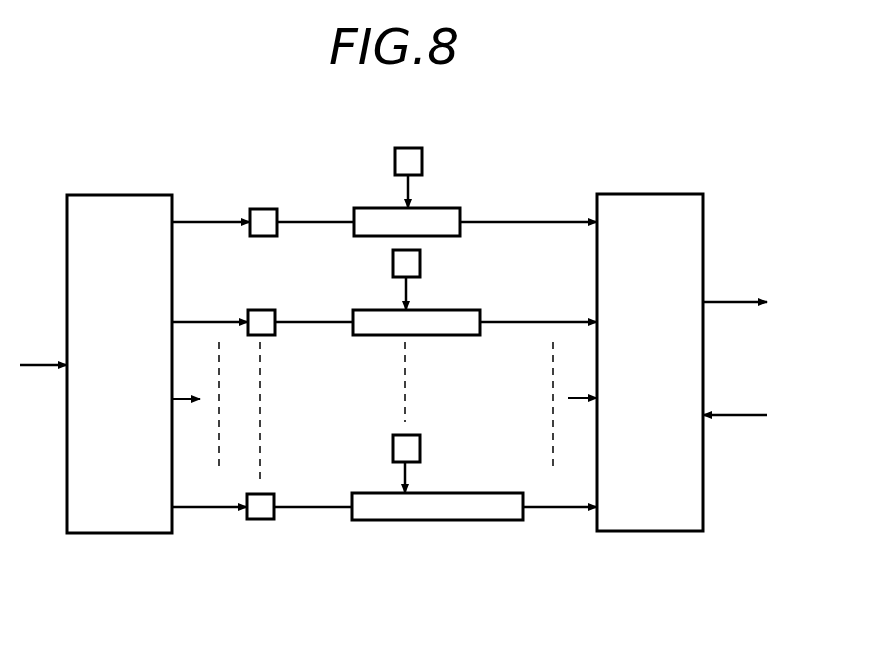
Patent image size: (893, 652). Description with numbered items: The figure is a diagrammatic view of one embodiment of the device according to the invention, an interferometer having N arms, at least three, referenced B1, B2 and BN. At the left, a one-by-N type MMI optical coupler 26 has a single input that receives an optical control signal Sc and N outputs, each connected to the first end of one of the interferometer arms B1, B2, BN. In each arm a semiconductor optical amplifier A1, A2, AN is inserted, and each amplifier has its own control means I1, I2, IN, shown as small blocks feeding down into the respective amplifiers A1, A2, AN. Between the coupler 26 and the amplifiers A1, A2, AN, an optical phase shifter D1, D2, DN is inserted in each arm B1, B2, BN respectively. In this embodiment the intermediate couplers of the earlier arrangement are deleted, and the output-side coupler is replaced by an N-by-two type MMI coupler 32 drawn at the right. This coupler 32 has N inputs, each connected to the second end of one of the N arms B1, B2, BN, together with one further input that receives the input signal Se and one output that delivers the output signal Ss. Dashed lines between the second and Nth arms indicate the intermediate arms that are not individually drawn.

The 1×N optical coupler 26 is at (116, 520).
The N×2 coupler 32 is at (649, 520).
The optical control signal Sc is at (43, 350).
The output signal Ss is at (735, 287).
The input signal Se is at (735, 398).
The interferometer arm B1 is at (213, 221).
The interferometer arm B2 is at (203, 321).
The interferometer arm BN is at (203, 508).
The optical phase shifter D1 is at (261, 213).
The optical phase shifter D2 is at (260, 313).
The optical phase shifter DN is at (258, 515).
The semiconductor optical amplifier A1 is at (442, 213).
The semiconductor optical amplifier A2 is at (470, 315).
The semiconductor optical amplifier AN is at (441, 514).
The control means I1 is at (407, 148).
The control means I2 is at (400, 265).
The control means IN is at (400, 450).